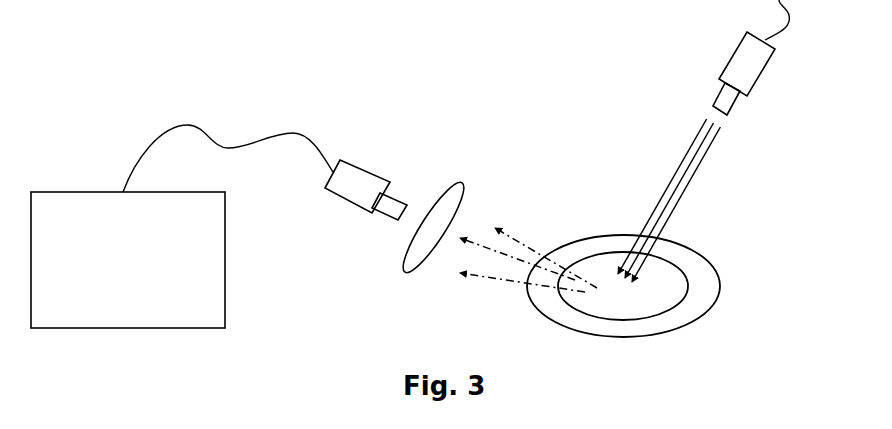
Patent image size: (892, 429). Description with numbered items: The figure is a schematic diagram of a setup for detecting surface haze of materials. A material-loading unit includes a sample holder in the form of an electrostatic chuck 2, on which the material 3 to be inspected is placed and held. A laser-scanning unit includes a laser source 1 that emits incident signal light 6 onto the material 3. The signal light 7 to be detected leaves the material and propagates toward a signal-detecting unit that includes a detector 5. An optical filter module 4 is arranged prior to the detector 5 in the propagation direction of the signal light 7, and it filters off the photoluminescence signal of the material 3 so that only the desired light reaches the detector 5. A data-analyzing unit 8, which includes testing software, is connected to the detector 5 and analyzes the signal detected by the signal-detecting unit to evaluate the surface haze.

The laser source 1 is at (752, 65).
The electrostatic chuck 2 is at (717, 273).
The material to be inspected 3 is at (635, 295).
The optical filter module 4 is at (453, 193).
The detector 5 is at (370, 172).
The incident signal light 6 is at (690, 187).
The signal light to be detected 7 is at (517, 280).
The data-analyzing unit 8 is at (208, 289).